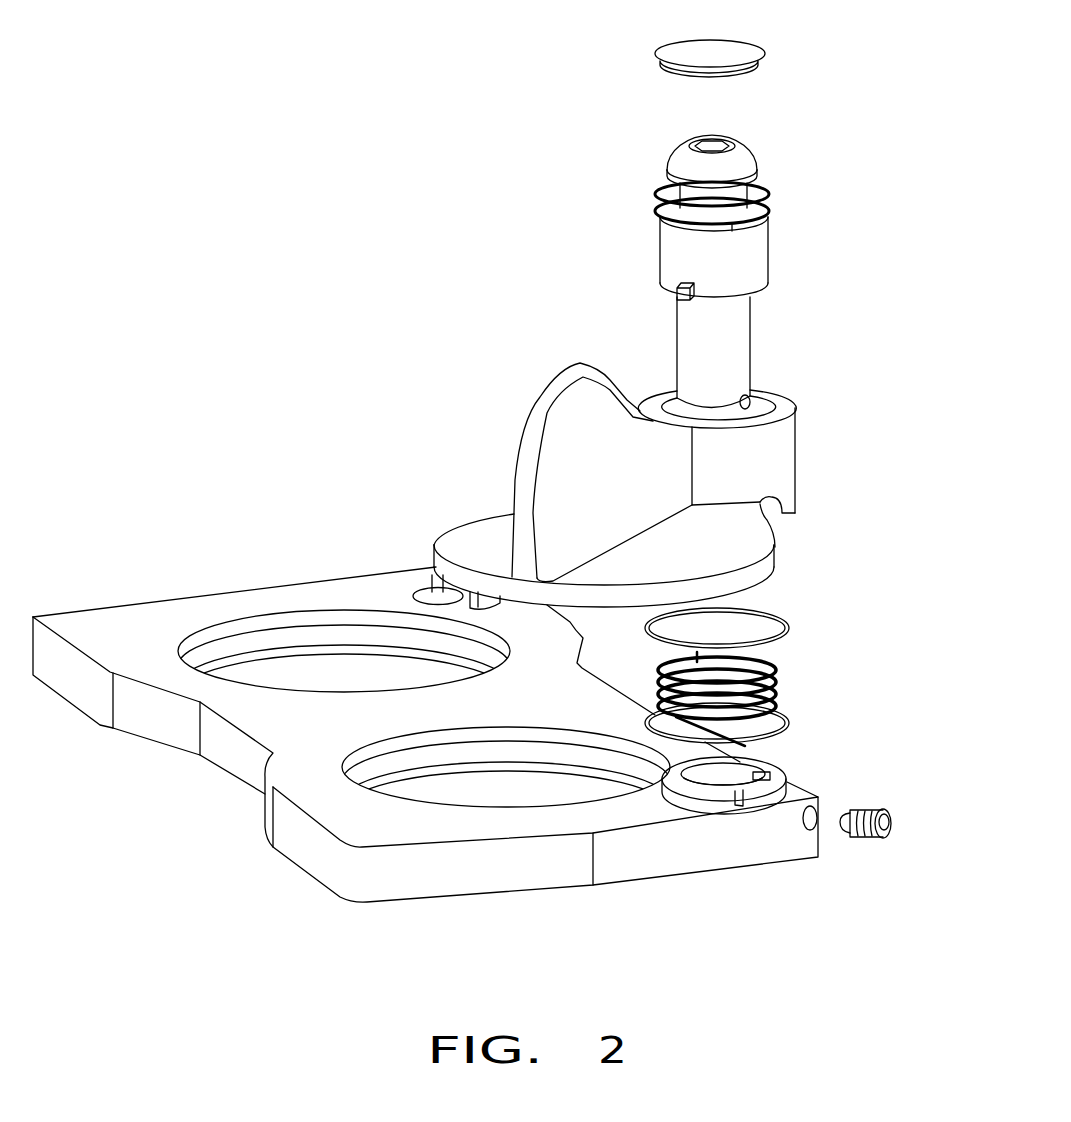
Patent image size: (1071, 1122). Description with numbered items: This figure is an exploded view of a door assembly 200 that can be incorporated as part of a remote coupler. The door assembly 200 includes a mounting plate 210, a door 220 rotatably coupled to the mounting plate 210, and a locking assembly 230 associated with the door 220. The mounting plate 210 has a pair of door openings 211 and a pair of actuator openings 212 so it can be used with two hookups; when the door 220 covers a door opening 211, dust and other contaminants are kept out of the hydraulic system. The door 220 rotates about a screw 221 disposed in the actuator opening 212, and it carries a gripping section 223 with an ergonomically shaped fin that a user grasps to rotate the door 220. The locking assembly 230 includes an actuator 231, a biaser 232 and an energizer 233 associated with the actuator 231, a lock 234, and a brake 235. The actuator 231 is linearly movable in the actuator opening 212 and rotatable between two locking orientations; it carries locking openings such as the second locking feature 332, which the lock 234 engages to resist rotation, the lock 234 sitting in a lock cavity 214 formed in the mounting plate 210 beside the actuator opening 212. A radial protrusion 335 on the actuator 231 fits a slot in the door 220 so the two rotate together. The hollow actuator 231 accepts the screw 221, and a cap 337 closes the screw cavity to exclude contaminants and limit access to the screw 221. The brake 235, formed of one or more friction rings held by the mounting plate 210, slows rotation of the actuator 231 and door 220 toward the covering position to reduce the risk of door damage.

The door assembly 200 is at (833, 155).
The mounting plate 210 is at (220, 750).
The door opening 211 is at (287, 620).
The actuator opening 212 is at (430, 597).
The lock cavity 214 is at (817, 830).
The door 220 is at (797, 472).
The screw 221 is at (678, 153).
The gripping section 223 is at (497, 441).
The locking assembly 230 is at (798, 292).
The actuator 231 is at (785, 242).
The biaser 232 is at (668, 198).
The energizer 233 is at (777, 682).
The lock 234 is at (880, 810).
The brake 235 is at (777, 612).
The second locking feature 332 is at (755, 400).
The protrusion 335 is at (678, 295).
The cap 337 is at (682, 45).